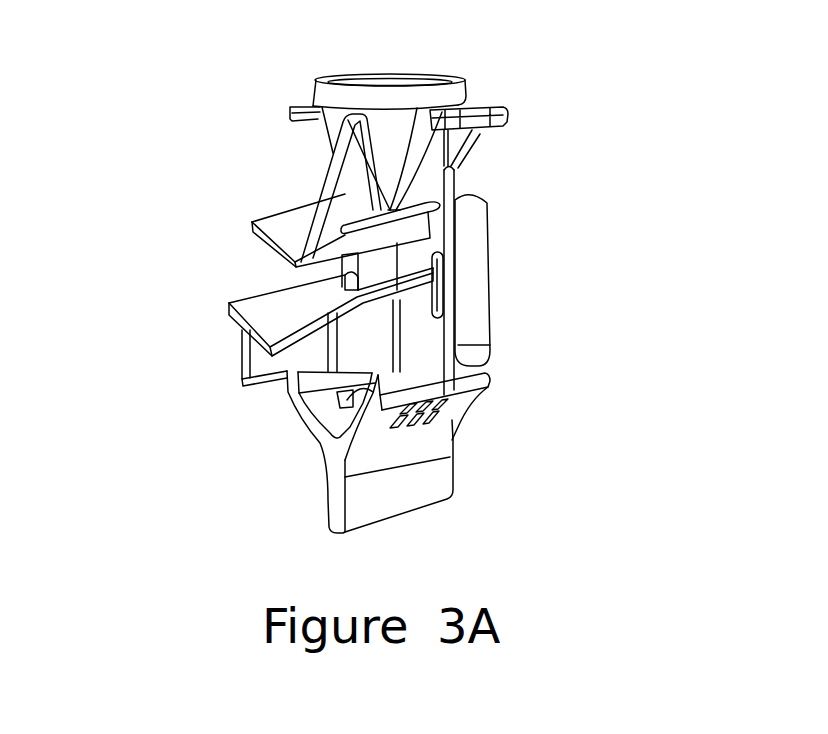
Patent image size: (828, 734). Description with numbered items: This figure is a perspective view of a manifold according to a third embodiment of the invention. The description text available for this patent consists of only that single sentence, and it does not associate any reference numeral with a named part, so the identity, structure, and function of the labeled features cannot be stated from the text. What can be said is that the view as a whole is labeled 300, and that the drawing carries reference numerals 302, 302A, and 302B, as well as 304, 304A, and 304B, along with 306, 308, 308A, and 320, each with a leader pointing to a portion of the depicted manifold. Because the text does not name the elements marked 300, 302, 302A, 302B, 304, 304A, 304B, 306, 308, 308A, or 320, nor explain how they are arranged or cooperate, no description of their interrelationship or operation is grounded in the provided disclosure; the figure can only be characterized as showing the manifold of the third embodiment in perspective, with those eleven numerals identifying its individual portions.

The nozzle holder assembly 300 is at (570, 90).
The base 302 is at (340, 427).
The base ledge 302A is at (290, 403).
The grip ridges 302B is at (398, 426).
The post 304 is at (407, 258).
The rib 304A is at (433, 417).
The cup rim 304B is at (358, 82).
The pin 306 is at (452, 305).
The lower shelf 308 is at (290, 278).
The upper shelf 308A is at (252, 263).
The left post 320 is at (267, 338).